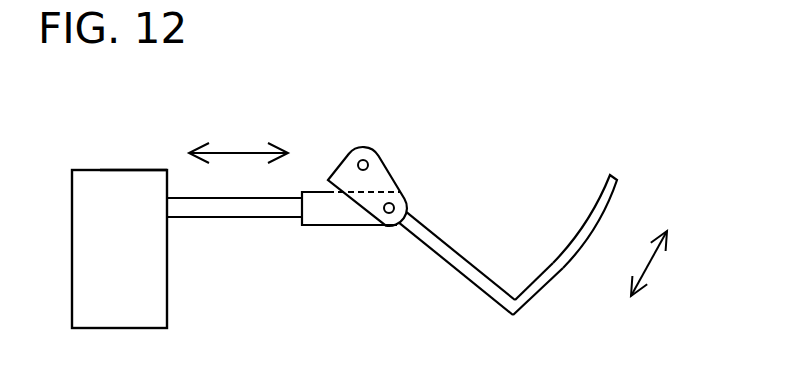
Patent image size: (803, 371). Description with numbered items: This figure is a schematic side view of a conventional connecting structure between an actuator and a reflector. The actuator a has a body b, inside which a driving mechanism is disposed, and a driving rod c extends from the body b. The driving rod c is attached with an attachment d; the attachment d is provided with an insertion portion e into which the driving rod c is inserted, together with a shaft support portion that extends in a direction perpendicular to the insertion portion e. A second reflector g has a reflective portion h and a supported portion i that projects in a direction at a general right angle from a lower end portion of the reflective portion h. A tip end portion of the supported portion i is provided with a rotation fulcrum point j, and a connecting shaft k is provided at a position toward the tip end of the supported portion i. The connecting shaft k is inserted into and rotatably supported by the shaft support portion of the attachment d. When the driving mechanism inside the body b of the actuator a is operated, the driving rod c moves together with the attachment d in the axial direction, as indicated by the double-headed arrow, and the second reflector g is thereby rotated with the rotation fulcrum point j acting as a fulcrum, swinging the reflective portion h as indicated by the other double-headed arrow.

The actuator a is at (97, 179).
The body b is at (150, 170).
The driving rod c is at (231, 213).
The attachment d is at (312, 192).
The insertion portion e is at (322, 227).
The second reflector g is at (533, 296).
The reflective portion h is at (565, 260).
The supported portion i is at (427, 243).
The rotation fulcrum point j is at (368, 162).
The connecting shaft k is at (397, 203).